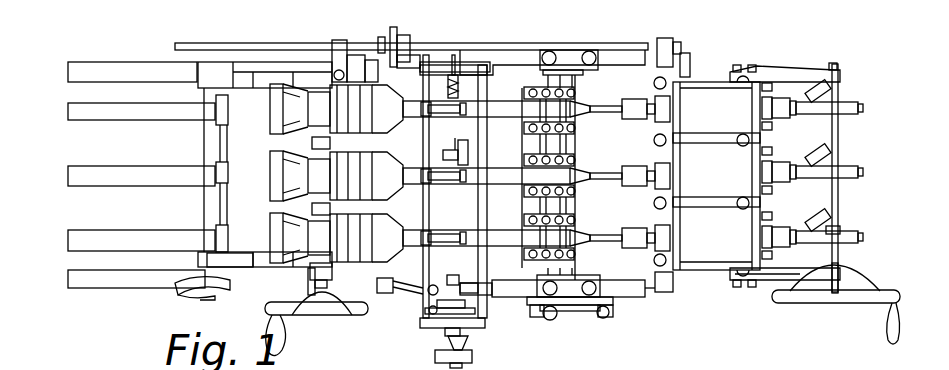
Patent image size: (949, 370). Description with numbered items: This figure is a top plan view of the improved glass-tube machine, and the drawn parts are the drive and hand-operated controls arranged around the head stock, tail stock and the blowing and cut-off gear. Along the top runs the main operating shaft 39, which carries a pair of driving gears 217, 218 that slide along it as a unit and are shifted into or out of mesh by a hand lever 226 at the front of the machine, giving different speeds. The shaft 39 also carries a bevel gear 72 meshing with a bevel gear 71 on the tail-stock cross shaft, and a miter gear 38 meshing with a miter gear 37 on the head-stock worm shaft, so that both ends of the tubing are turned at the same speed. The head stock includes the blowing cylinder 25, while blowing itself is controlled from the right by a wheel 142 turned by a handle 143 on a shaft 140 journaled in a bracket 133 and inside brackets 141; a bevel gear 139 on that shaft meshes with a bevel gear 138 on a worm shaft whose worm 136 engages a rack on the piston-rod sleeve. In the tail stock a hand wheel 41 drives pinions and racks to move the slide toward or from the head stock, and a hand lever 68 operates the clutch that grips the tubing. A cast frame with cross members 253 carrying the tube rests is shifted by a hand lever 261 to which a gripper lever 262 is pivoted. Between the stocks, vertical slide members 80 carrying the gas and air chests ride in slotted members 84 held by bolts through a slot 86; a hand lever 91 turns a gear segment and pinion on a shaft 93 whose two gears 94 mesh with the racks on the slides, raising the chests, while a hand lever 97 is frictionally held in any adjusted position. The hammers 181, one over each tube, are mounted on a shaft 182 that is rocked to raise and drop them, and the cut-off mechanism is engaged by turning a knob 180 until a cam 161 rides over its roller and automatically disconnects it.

The main operating shaft 39 is at (218, 43).
The bevel gear 72 is at (341, 42).
The bevel gear 71 is at (356, 55).
The driving gear 217 is at (395, 30).
The driving gear 218 is at (410, 40).
The cross member 253 is at (206, 144).
The slide member 80 is at (543, 75).
The member 84 is at (600, 68).
The slot 86 is at (572, 53).
The gear 94 is at (580, 73).
The shaft 93 is at (578, 207).
The miter gear 38 is at (668, 40).
The miter gear 37 is at (688, 57).
The blowing cylinder 25 is at (707, 176).
The inside bracket 141 is at (780, 72).
The shaft 140 is at (838, 202).
The bracket 133 is at (855, 245).
The worm 136 is at (783, 162).
The bevel gear 138 is at (820, 215).
The bevel gear 139 is at (838, 230).
The wheel 142 is at (883, 298).
The handle 143 is at (901, 330).
The shaft 182 is at (425, 207).
The cam 161 is at (480, 212).
The hammer 181 is at (470, 240).
The knob 180 is at (472, 357).
The hand lever 91 is at (613, 308).
The hand lever 97 is at (553, 322).
The hand lever 68 is at (330, 283).
The hand lever 226 is at (380, 292).
The hand wheel 41 is at (315, 313).
The gripper lever 262 is at (178, 285).
The hand lever 261 is at (178, 295).